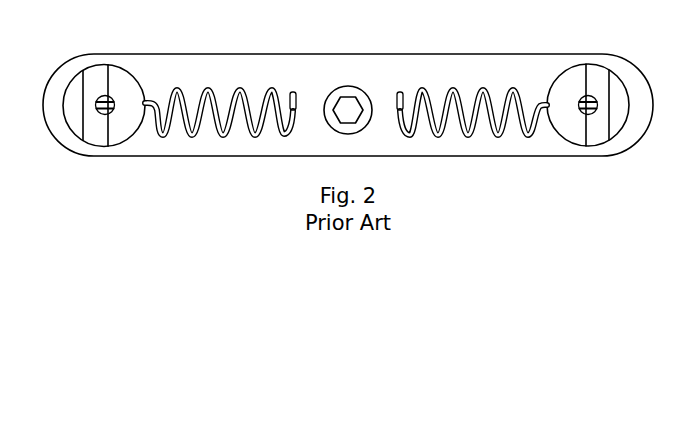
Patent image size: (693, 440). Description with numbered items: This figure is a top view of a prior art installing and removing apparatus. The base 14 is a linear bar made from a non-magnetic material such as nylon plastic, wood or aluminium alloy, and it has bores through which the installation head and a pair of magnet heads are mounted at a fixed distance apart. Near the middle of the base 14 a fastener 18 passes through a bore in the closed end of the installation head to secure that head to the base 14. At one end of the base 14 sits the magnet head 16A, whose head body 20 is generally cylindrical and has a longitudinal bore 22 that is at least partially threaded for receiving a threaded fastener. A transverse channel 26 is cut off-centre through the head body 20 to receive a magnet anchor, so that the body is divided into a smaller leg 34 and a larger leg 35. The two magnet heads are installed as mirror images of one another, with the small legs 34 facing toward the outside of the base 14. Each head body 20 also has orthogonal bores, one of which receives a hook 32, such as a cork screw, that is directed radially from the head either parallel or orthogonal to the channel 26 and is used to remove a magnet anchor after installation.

The magnet head 16A is at (139, 61).
The transverse channel 26 is at (93, 137).
The leg 35 is at (570, 72).
The leg 34 is at (80, 76).
The longitudinal bore 22 is at (102, 96).
The head body 20 is at (139, 114).
The hook 32 is at (250, 100).
The fastener 18 is at (348, 99).
The base 14 is at (427, 84).